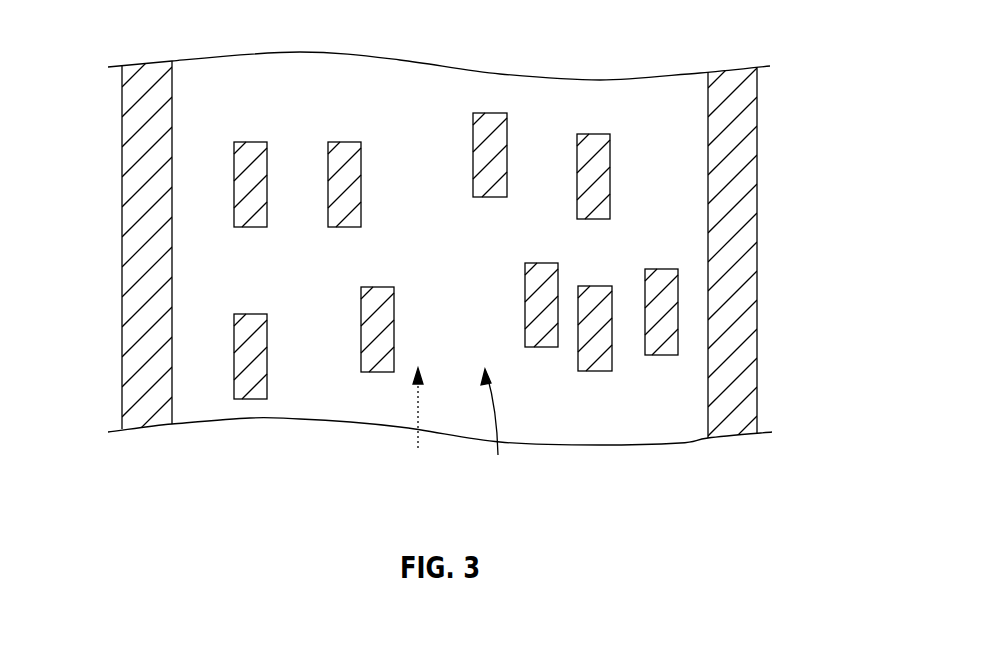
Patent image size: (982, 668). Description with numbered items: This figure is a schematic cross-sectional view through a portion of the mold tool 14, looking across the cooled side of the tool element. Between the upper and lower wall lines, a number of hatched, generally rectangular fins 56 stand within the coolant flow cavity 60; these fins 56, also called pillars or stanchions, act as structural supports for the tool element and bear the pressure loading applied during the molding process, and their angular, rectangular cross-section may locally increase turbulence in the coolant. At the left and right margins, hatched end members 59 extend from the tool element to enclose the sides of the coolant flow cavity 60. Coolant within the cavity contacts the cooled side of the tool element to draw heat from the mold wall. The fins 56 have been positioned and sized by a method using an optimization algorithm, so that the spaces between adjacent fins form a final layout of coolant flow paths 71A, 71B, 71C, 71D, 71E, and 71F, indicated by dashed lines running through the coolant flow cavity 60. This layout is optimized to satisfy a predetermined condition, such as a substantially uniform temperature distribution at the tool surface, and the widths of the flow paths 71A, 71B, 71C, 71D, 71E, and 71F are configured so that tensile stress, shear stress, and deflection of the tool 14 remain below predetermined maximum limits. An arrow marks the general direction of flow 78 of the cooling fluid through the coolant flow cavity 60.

The tool 14 is at (799, 56).
The fins 56 is at (248, 146).
The end members 59 is at (128, 248).
The coolant flow cavity 60 is at (498, 427).
The coolant flow path 71A is at (207, 343).
The coolant flow path 71B is at (310, 352).
The coolant flow path 71C is at (467, 348).
The coolant flow path 71D is at (568, 340).
The coolant flow path 71E is at (627, 340).
The coolant flow path 71F is at (693, 330).
The general direction of flow 78 is at (417, 434).